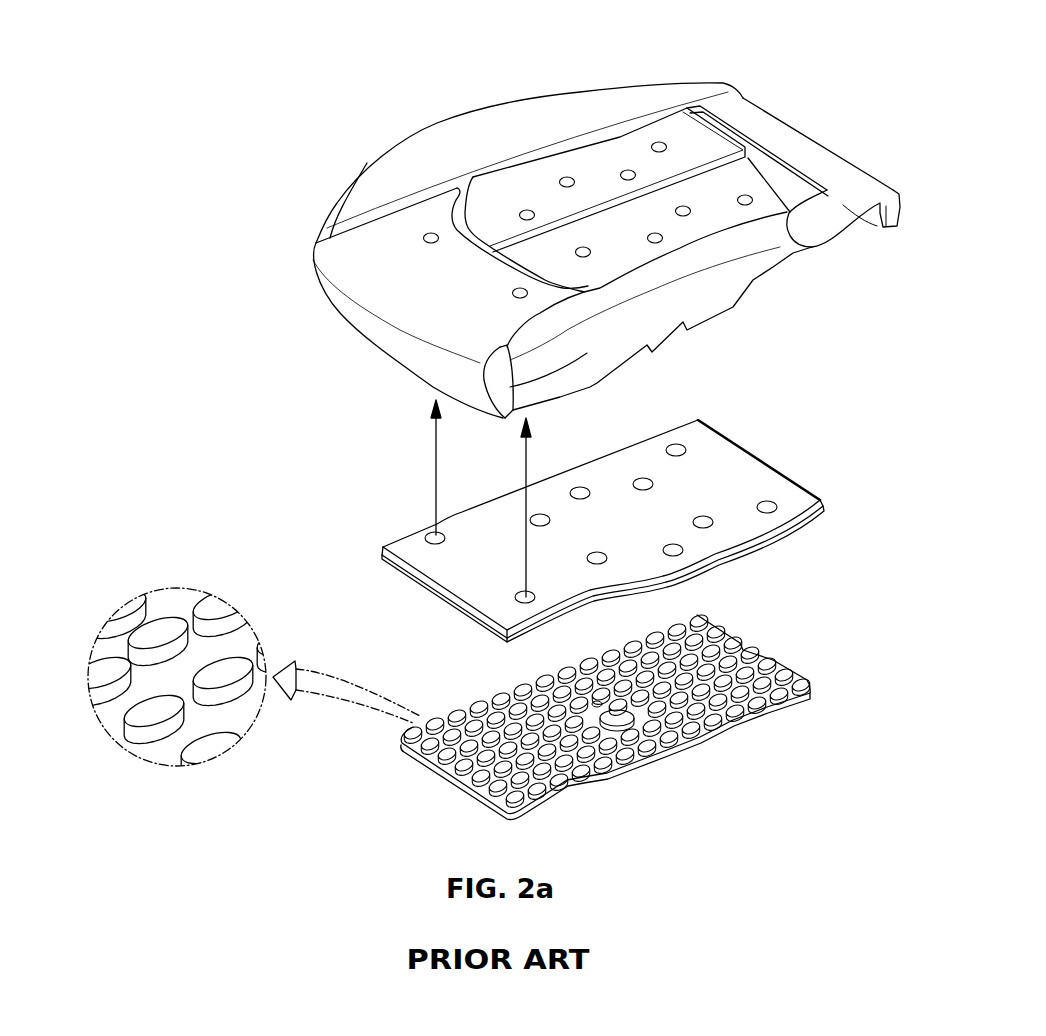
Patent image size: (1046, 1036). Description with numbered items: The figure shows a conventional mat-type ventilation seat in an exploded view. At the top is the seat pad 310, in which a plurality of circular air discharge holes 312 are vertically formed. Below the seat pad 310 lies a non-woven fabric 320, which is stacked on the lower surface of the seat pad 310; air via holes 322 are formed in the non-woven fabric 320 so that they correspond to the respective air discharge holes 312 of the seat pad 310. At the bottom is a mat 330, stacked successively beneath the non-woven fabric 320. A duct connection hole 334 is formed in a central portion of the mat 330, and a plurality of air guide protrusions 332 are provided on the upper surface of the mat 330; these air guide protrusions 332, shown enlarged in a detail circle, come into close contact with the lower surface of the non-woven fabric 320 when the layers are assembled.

The seat pad 310 is at (431, 112).
The air discharge holes 312 is at (658, 142).
The non-woven fabric 320 is at (744, 429).
The air via holes 322 is at (430, 534).
The mat 330 is at (797, 653).
The air guide protrusions 332 is at (157, 632).
The duct connection hole 334 is at (630, 728).